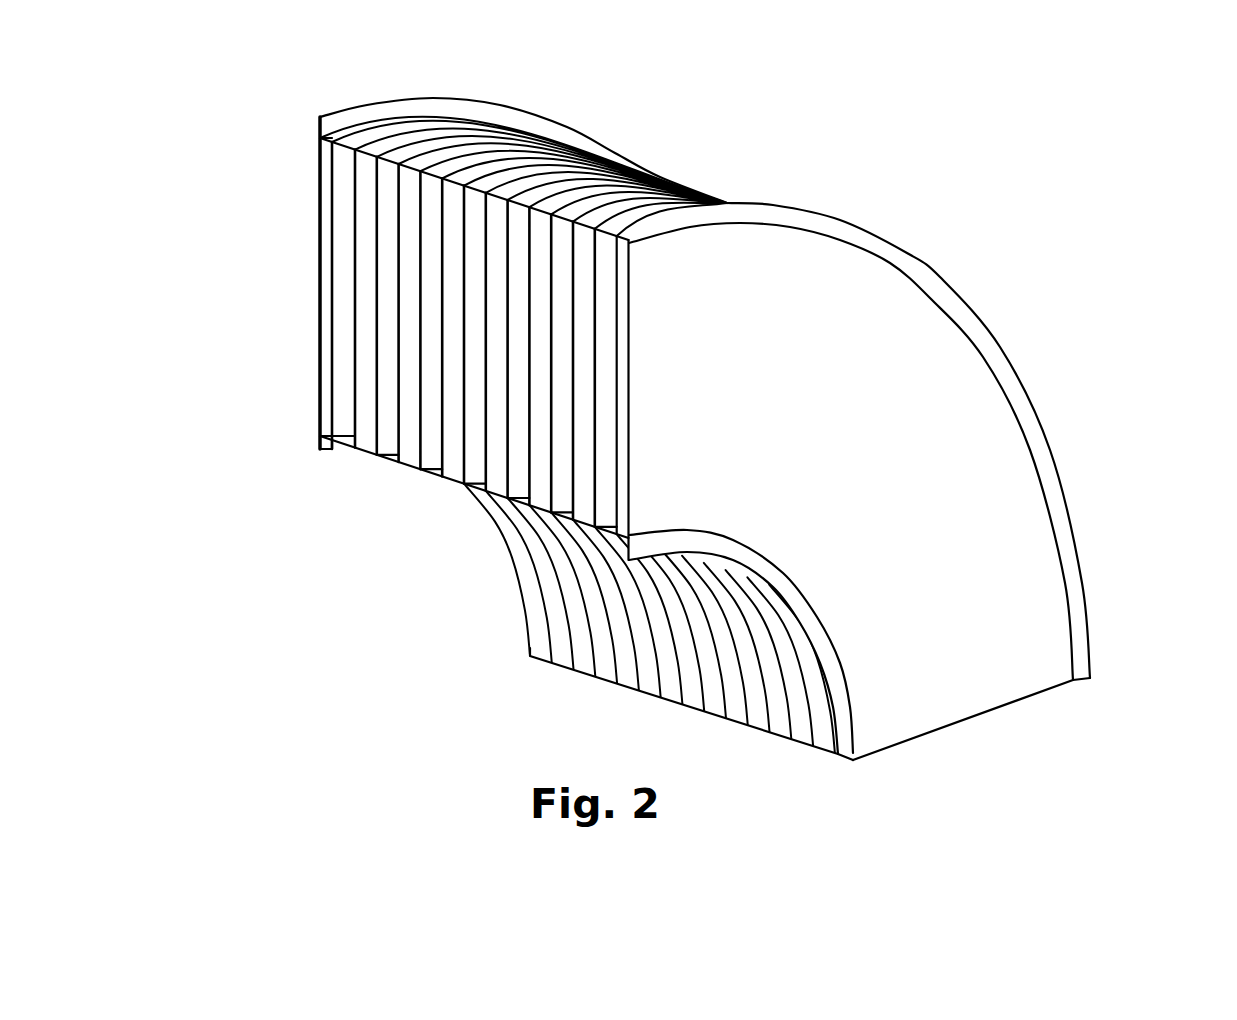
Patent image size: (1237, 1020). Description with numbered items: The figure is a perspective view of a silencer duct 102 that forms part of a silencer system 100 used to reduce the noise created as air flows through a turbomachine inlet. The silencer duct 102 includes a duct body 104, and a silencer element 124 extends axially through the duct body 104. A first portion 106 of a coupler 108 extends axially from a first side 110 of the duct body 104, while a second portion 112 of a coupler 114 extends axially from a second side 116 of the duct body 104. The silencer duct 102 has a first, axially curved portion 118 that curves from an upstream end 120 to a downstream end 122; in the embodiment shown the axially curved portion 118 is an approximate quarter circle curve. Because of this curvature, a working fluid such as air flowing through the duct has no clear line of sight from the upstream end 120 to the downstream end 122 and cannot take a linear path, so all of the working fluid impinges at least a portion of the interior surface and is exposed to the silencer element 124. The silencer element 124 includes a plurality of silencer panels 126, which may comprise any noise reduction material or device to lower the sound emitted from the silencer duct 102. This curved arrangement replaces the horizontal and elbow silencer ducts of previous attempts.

The silencer system 100 is at (996, 160).
The silencer duct 102 is at (645, 104).
The duct body 104 is at (967, 680).
The first portion 106 is at (321, 115).
The coupler 108 is at (311, 119).
The first side 110 is at (241, 246).
The second portion 112 is at (1092, 677).
The coupler 114 is at (1103, 677).
The second side 116 is at (889, 552).
The axially curved portion 118 is at (1036, 407).
The upstream end 120 is at (250, 402).
The downstream end 122 is at (952, 790).
The silencer element 124 is at (369, 325).
The silencer panels 126 is at (415, 462).